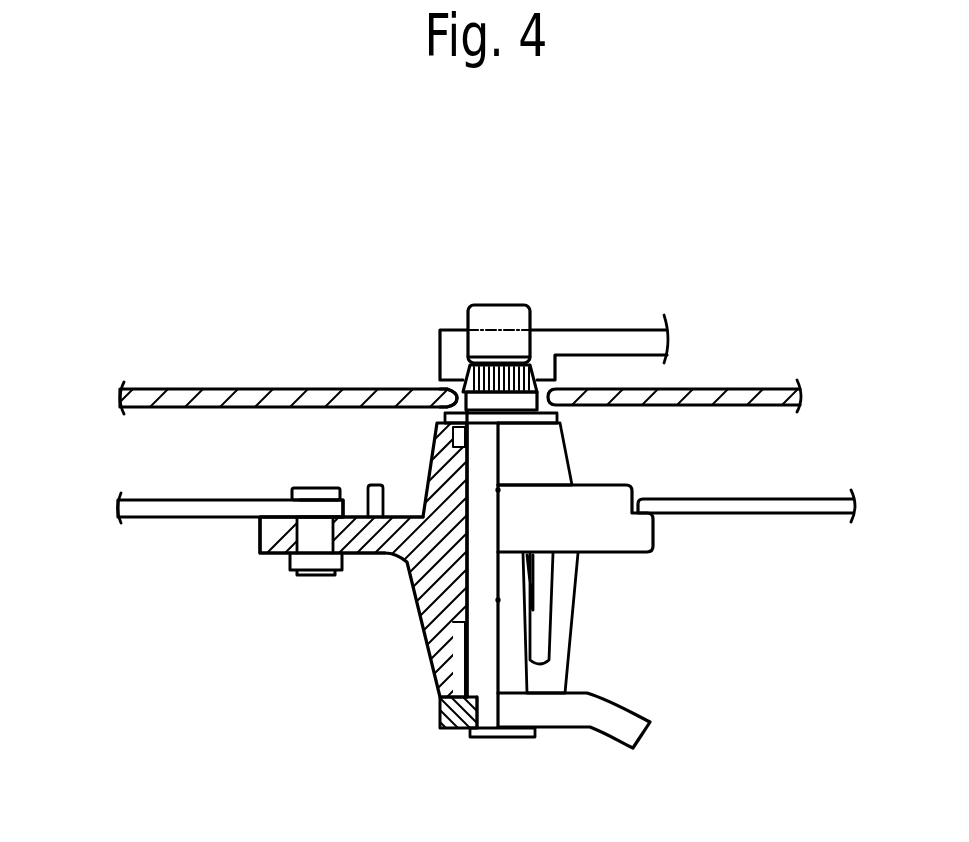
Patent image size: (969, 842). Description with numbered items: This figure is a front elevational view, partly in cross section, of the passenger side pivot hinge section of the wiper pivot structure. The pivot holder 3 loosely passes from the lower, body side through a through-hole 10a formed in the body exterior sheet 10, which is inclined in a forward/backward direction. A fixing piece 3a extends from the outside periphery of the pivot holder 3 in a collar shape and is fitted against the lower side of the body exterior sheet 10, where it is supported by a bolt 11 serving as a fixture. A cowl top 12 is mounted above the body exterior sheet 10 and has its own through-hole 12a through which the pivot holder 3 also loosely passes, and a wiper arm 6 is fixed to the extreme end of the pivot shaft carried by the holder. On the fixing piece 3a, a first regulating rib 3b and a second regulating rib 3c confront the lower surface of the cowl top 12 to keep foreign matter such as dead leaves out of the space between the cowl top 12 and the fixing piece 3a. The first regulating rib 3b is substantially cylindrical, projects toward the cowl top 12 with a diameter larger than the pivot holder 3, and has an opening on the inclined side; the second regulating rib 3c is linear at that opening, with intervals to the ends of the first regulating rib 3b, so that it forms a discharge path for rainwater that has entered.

The pivot holder 3 is at (422, 645).
The fixing piece 3a is at (393, 552).
The first regulating rib 3b is at (618, 498).
The second regulating rib 3c is at (375, 488).
The wiper arm 6 is at (590, 340).
The body exterior sheet 10 is at (155, 518).
The through-hole 10a is at (343, 512).
The bolt 11 is at (290, 493).
The cowl top 12 is at (222, 388).
The through-hole 12a is at (453, 393).